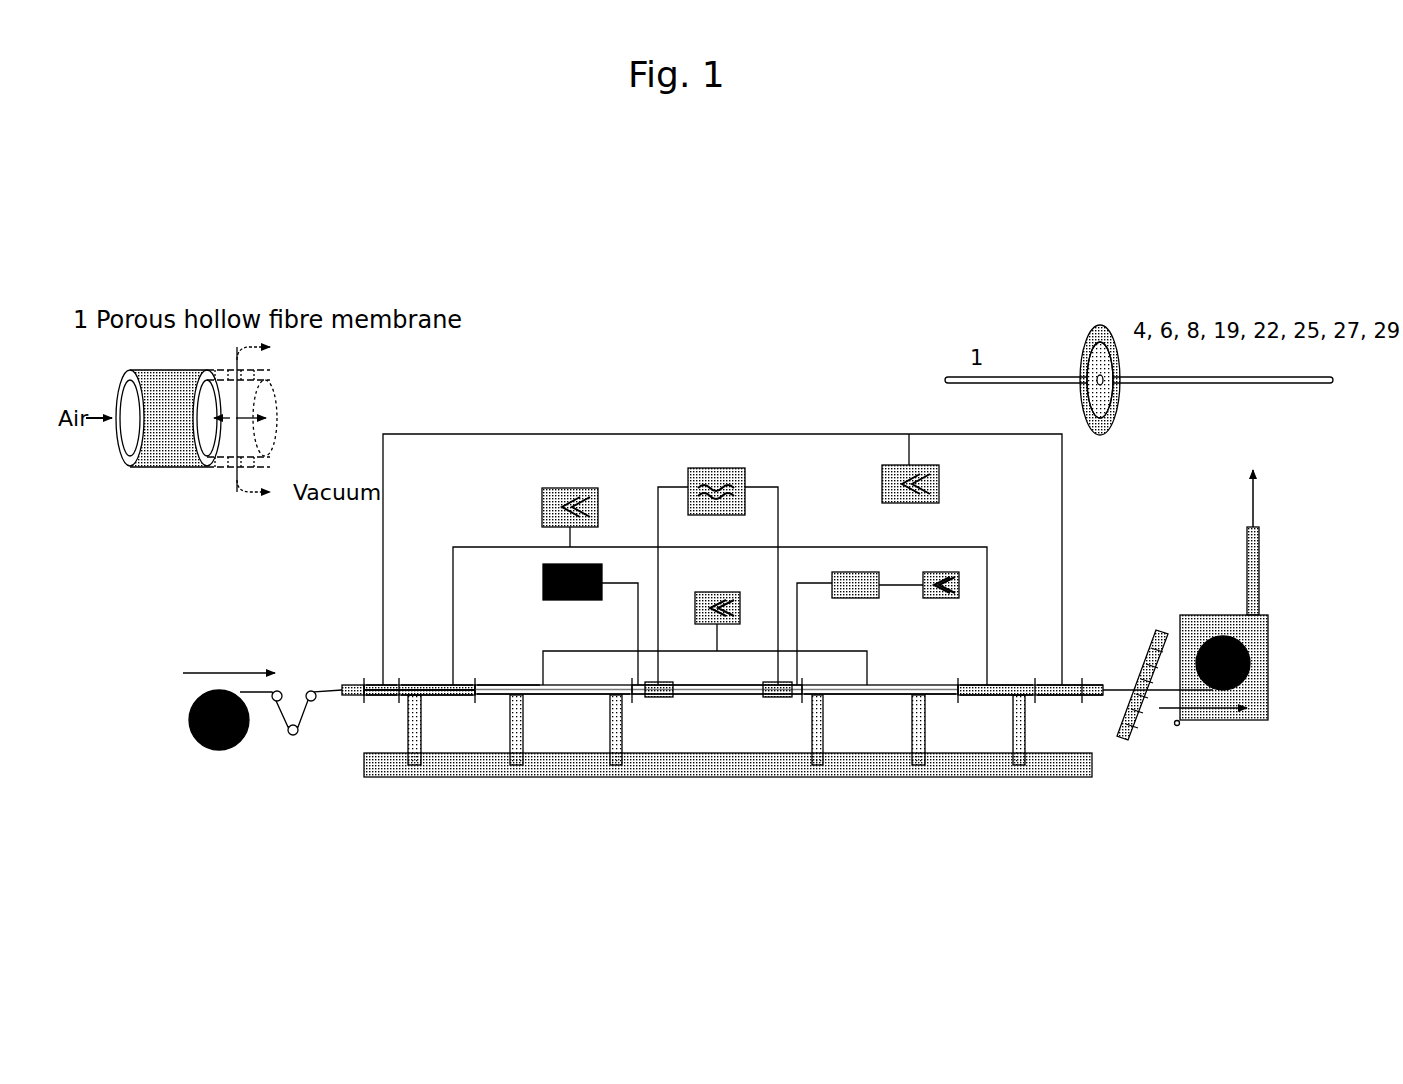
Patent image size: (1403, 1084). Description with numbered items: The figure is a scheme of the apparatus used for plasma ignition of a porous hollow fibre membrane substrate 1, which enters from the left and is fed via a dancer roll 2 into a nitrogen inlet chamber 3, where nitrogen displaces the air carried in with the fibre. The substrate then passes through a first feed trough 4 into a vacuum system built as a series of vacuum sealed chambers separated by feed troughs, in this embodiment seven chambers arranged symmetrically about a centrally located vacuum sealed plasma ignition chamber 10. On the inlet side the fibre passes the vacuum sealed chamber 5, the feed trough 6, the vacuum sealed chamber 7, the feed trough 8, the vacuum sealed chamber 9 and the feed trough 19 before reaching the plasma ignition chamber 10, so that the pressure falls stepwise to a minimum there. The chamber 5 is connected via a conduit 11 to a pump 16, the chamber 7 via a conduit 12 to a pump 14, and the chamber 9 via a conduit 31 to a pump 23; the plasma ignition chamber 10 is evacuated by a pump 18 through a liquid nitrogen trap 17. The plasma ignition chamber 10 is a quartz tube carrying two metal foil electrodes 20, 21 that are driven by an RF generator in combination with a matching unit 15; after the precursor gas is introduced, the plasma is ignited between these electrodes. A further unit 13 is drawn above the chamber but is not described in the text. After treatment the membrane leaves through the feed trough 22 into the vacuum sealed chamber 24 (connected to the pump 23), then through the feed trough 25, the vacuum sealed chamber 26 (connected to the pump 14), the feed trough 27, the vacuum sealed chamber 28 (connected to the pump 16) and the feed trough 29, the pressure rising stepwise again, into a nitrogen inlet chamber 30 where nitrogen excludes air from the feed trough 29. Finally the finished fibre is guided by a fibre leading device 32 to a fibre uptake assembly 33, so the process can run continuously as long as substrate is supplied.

The porous hollow fibre membrane substrate 1 is at (229, 692).
The dancer roll 2 is at (291, 736).
The nitrogen inlet chamber 3 is at (347, 682).
The first feed trough 4 is at (357, 706).
The vacuum sealed chamber 5 is at (381, 705).
The feed trough 6 is at (399, 677).
The vacuum sealed chamber 7 is at (437, 705).
The feed trough 8 is at (472, 676).
The vacuum sealed chamber 9 is at (553, 710).
The vacuum sealed plasma ignition chamber 10 is at (705, 687).
The conduit 11 is at (722, 559).
The conduit 12 is at (720, 616).
The heater 13 is at (590, 624).
The pump 14 is at (570, 501).
The matching unit 15 is at (718, 564).
The pump 16 is at (910, 484).
The liquid nitrogen trap 17 is at (860, 628).
The pump 18 is at (941, 603).
The feed trough 19 is at (622, 678).
The electrode 20 is at (669, 676).
The electrode 21 is at (768, 676).
The feed trough 22 is at (816, 681).
The pump 23 is at (717, 608).
The vacuum sealed chamber 24 is at (880, 710).
The feed trough 25 is at (958, 678).
The vacuum sealed chamber 26 is at (996, 705).
The feed trough 27 is at (1036, 678).
The vacuum sealed chamber 28 is at (1070, 705).
The feed trough 29 is at (1082, 678).
The nitrogen inlet chamber 30 is at (1158, 677).
The conduit 31 is at (509, 674).
The fibre leading device 32 is at (1142, 690).
The fibre uptake assembly 33 is at (1213, 598).